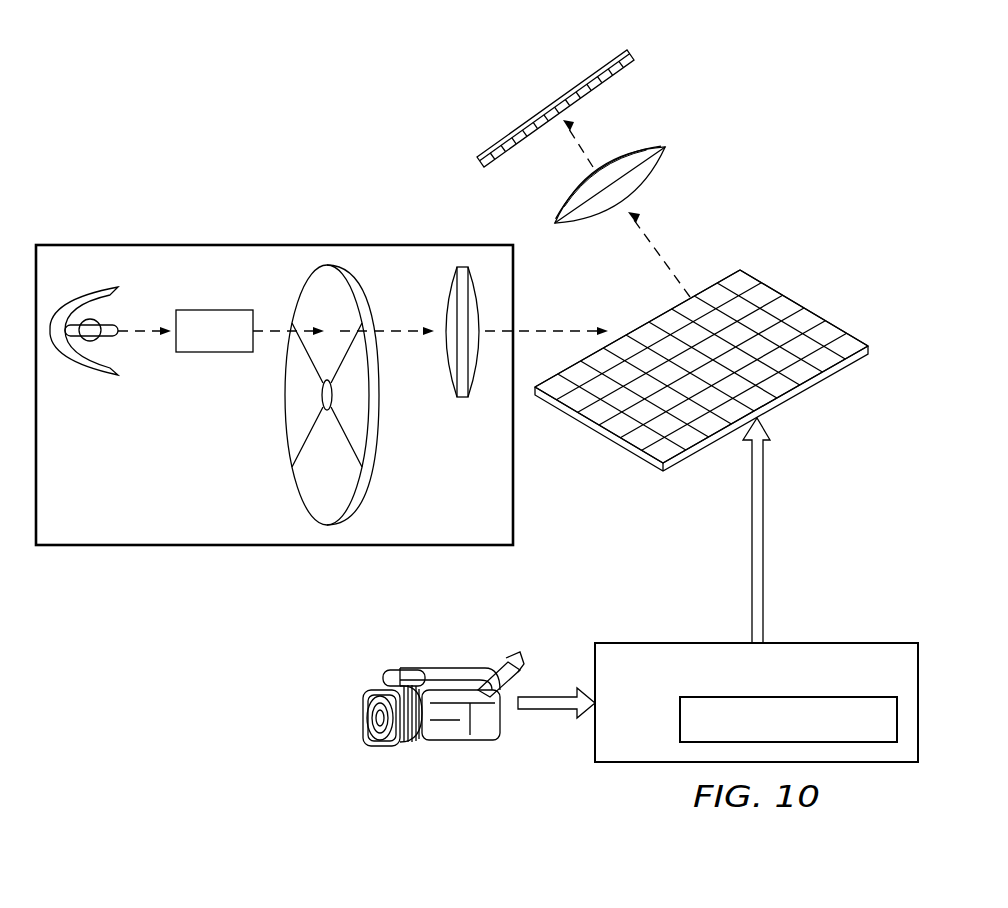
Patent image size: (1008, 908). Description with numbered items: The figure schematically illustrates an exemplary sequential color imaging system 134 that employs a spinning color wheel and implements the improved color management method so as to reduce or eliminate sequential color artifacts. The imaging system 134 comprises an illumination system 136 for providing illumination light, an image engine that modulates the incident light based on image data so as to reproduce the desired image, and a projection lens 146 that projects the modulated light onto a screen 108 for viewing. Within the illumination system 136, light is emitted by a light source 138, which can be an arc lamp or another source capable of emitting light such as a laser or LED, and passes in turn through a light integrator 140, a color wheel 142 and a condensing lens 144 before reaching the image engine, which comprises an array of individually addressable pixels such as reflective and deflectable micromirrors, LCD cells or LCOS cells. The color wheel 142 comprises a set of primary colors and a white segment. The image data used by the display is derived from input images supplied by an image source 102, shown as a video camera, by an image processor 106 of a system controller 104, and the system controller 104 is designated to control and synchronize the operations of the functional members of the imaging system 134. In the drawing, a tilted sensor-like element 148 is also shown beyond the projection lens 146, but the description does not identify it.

The image source 102 is at (442, 672).
The system controller 104 is at (865, 643).
The image processor 106 is at (680, 716).
The screen 108 is at (797, 315).
The imaging system 134 is at (363, 196).
The illumination system 136 is at (230, 546).
The light source 138 is at (93, 375).
The light integrator 140 is at (207, 355).
The color wheel 142 is at (313, 493).
The condensing lens 144 is at (462, 398).
The projection lens 146 is at (662, 147).
The display screen 148 is at (627, 54).